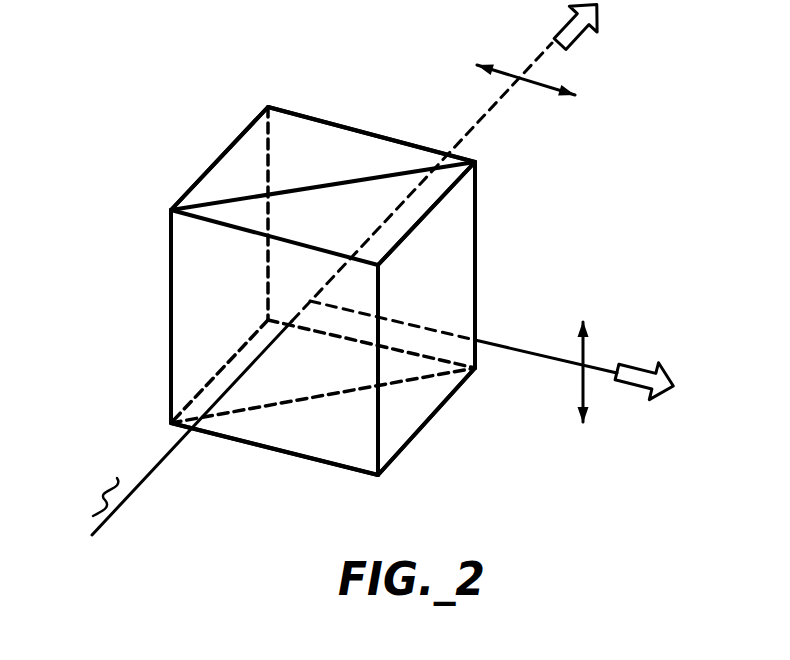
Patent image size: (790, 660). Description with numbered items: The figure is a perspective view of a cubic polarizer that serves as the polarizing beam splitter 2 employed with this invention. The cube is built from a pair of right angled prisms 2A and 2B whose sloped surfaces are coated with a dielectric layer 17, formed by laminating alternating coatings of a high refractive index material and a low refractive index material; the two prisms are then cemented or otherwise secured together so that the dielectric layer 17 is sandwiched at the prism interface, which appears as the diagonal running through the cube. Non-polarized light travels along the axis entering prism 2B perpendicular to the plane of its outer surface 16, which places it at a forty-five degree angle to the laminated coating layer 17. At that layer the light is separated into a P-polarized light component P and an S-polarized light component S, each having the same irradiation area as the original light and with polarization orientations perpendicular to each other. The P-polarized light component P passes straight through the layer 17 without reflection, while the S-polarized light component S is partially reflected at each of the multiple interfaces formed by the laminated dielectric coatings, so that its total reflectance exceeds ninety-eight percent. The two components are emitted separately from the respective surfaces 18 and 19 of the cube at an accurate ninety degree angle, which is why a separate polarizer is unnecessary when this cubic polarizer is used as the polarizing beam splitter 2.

The polarizing beam splitter 2 is at (204, 98).
The right angled prism 2A is at (303, 143).
The right angled prism 2B is at (443, 265).
The outer surface 16 is at (307, 444).
The dielectric layer 17 is at (333, 182).
The surface 18 is at (430, 405).
The surface 19 is at (412, 144).
The P-polarized light component P is at (522, 80).
The S-polarized light component S is at (583, 357).